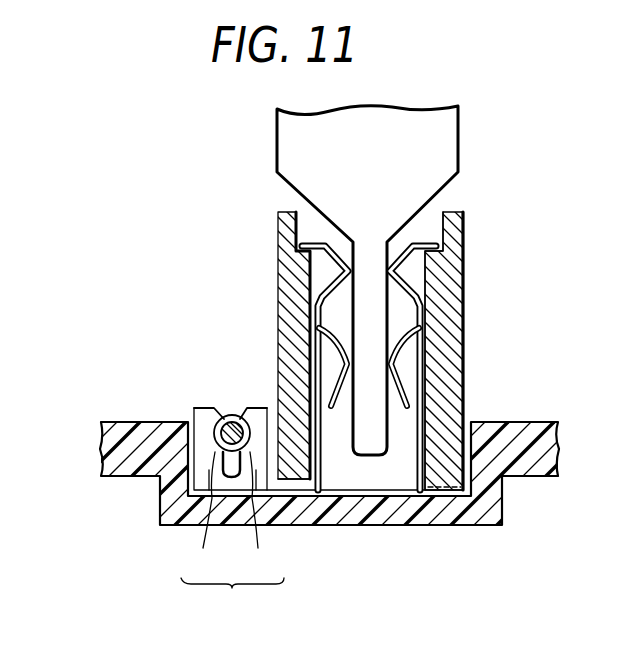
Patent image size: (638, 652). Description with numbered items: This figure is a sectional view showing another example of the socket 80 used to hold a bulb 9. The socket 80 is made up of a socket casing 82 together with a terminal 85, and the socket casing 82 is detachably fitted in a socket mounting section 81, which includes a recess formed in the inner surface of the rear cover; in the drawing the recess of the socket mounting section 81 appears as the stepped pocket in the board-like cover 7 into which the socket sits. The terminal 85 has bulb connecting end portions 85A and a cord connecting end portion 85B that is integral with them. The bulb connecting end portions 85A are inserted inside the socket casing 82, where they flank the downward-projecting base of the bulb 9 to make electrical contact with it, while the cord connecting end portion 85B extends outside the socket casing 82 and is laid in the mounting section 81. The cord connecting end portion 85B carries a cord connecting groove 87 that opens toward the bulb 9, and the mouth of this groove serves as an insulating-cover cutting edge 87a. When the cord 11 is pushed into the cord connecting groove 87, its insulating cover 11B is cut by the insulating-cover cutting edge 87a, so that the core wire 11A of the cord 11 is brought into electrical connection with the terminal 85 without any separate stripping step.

The printed circuit board 7 is at (527, 411).
The bulb 9 is at (448, 130).
The cord 11 is at (232, 600).
The core wire 11A is at (200, 525).
The insulating cover 11B is at (265, 525).
The socket 80 is at (465, 248).
The socket mounting section 81 is at (455, 405).
The socket casing 82 is at (451, 295).
The terminal 85 is at (182, 398).
The bulb connecting end portions 85A is at (337, 335).
The cord connecting end portion 85B is at (194, 401).
The cord connecting groove 87 is at (219, 398).
The insulating-cover cutting edge 87a is at (232, 401).